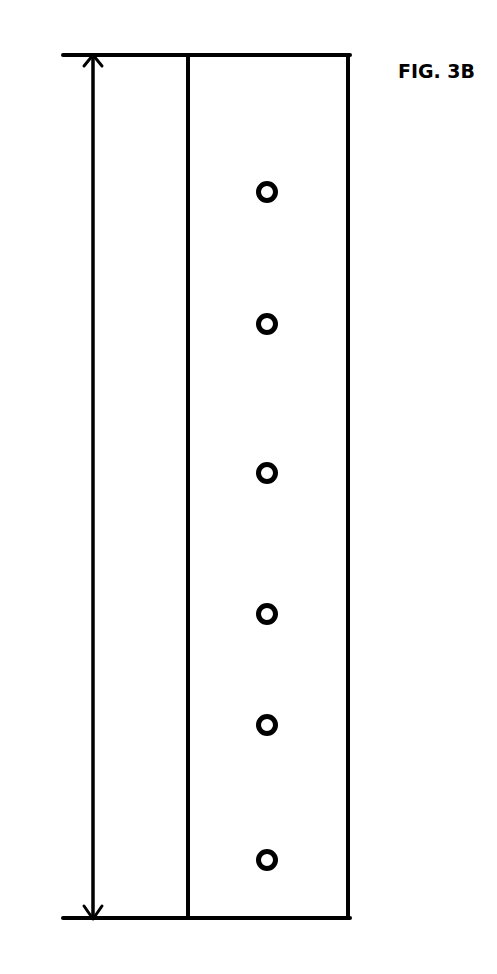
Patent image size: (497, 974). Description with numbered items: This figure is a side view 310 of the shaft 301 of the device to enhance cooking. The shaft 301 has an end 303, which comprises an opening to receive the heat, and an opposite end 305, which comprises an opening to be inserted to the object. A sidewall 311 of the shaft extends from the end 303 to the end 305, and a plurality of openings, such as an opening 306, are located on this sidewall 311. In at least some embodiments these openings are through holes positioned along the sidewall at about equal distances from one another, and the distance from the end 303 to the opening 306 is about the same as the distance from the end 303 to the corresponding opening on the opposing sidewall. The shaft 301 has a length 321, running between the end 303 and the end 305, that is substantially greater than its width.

The side view 310 is at (435, 113).
The end 303 is at (232, 54).
The end 305 is at (246, 919).
The sidewall 311 is at (318, 263).
The shaft 301 is at (188, 439).
The opening 306 is at (290, 600).
The length 321 is at (69, 487).